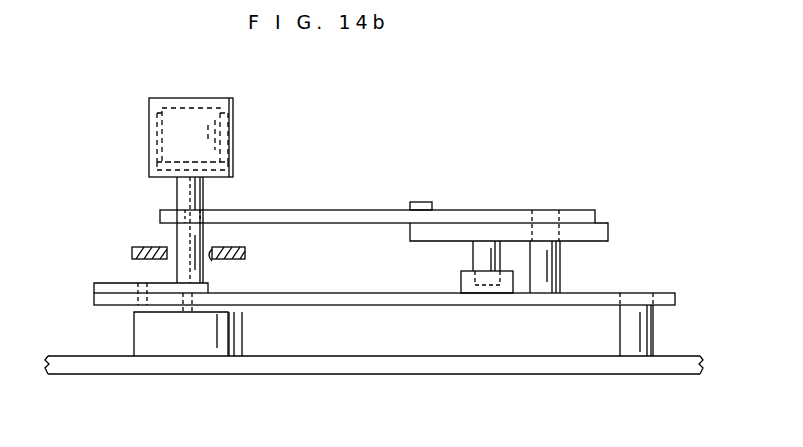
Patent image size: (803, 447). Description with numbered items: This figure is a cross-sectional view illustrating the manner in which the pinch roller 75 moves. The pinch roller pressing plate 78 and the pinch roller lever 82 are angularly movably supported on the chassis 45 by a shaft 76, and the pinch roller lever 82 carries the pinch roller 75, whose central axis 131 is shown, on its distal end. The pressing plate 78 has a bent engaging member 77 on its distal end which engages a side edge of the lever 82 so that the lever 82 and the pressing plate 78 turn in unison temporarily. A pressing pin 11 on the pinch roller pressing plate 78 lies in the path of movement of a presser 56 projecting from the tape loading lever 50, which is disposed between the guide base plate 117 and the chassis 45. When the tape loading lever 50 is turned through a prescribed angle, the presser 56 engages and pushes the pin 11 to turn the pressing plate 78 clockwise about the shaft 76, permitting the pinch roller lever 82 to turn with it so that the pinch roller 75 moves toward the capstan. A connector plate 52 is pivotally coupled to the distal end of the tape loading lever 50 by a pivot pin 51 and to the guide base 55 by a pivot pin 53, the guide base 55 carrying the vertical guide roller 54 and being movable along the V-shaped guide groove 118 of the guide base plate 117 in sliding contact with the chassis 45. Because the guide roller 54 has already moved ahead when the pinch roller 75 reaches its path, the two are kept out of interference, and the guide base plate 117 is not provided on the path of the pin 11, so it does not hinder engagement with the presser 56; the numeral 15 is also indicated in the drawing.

The pressing pin 11 is at (473, 250).
The support block 15 is at (634, 329).
The chassis 45 is at (370, 368).
The tape loading lever 50 is at (334, 293).
The pivot pin 51 is at (144, 284).
The connector plate 52 is at (94, 287).
The pivot pin 53 is at (187, 310).
The guide roller 54 is at (215, 142).
The guide base 55 is at (238, 328).
The presser 56 is at (461, 280).
The pinch roller 75 is at (233, 100).
The shaft 76 is at (547, 210).
The bent engaging member 77 is at (426, 202).
The pinch roller pressing plate 78 is at (597, 230).
The pinch roller lever 82 is at (345, 210).
The guide base plate 117 is at (150, 246).
The guide groove 118 is at (212, 259).
The central axis 131 is at (190, 196).